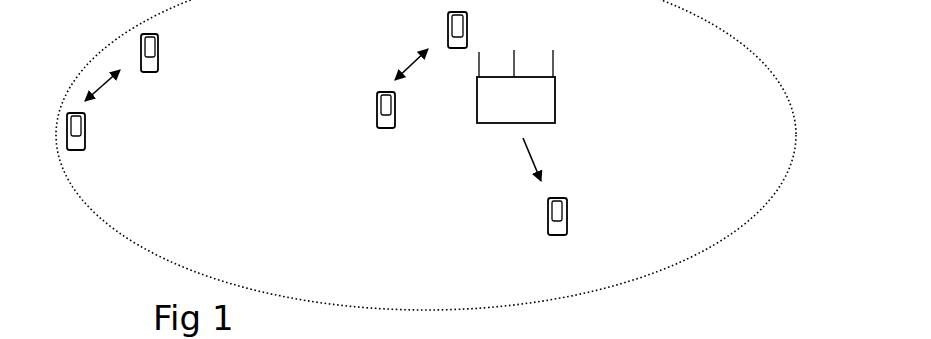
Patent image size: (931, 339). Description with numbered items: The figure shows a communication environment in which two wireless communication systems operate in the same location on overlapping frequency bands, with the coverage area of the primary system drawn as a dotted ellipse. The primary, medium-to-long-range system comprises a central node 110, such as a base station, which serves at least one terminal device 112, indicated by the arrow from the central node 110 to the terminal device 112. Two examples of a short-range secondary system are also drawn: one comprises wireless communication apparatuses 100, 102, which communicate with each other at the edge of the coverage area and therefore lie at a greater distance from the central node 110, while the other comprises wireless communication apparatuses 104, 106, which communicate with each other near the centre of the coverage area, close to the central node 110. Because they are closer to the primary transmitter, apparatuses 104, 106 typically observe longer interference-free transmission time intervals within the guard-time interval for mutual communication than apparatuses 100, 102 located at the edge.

The wireless communication apparatus 100 is at (158, 58).
The wireless communication apparatus 102 is at (85, 135).
The wireless communication apparatus 104 is at (467, 33).
The wireless communication apparatus 106 is at (395, 113).
The central node 110 is at (555, 110).
The terminal device 112 is at (567, 220).